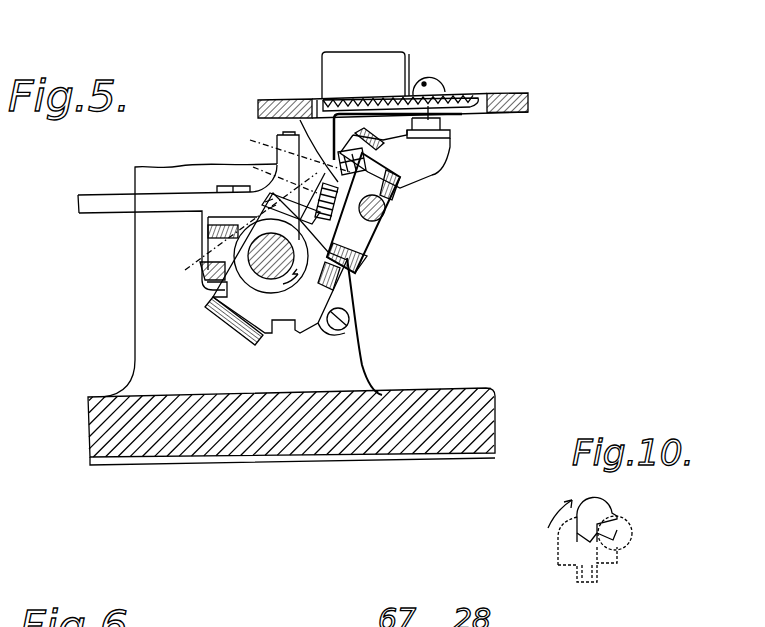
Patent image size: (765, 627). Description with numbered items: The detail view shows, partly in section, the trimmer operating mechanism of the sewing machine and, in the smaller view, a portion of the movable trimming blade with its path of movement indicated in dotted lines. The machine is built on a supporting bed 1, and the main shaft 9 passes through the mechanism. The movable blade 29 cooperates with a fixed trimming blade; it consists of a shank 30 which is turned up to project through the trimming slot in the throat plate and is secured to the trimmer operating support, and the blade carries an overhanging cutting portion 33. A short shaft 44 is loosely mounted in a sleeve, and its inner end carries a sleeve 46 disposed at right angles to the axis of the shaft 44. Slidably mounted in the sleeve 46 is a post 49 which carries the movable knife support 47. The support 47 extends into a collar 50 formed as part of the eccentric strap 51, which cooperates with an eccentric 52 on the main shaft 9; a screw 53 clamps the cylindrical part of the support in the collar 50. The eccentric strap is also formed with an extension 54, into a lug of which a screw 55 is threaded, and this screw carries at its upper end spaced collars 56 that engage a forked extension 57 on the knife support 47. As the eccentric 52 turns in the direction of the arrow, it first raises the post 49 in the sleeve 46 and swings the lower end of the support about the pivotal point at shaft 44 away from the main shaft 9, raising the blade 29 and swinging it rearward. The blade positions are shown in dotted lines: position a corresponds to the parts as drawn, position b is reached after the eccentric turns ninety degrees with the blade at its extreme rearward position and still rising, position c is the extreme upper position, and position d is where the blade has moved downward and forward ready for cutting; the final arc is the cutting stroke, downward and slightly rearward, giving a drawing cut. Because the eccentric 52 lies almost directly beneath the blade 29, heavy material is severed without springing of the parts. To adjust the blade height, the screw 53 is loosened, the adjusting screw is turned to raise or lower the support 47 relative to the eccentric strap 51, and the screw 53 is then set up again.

In FIG. 5, the supporting bed 1 is at (306, 433).
In FIG. 5, the main shaft 9 is at (258, 258).
In FIG. 5, the movable blade 29 is at (426, 83).
In FIG. 5, the shank 30 is at (436, 134).
In FIG. 5, the overhanging cutting portion 33 is at (440, 82).
In FIG. 5, the short shaft 44 is at (388, 207).
In FIG. 5, the sleeve 46 is at (370, 244).
In FIG. 5, the movable knife support 47 is at (422, 153).
In FIG. 5, the post 49 is at (352, 274).
In FIG. 5, the collar 50 is at (307, 311).
In FIG. 5, the eccentric strap 51 is at (250, 283).
In FIG. 5, the eccentric 52 is at (232, 305).
In FIG. 5, the screw 53 is at (352, 318).
In FIG. 5, the extension 54 is at (264, 141).
In FIG. 5, the screw 55 is at (230, 159).
In FIG. 5, the spaced collars 56 is at (358, 180).
In FIG. 5, the forked extension 57 is at (340, 175).
In FIG. 10, the position of trimming blade a is at (585, 576).
In FIG. 10, the position of trimming blade b is at (568, 540).
In FIG. 10, the position of trimming blade c is at (593, 503).
In FIG. 10, the position of trimming blade d is at (627, 538).